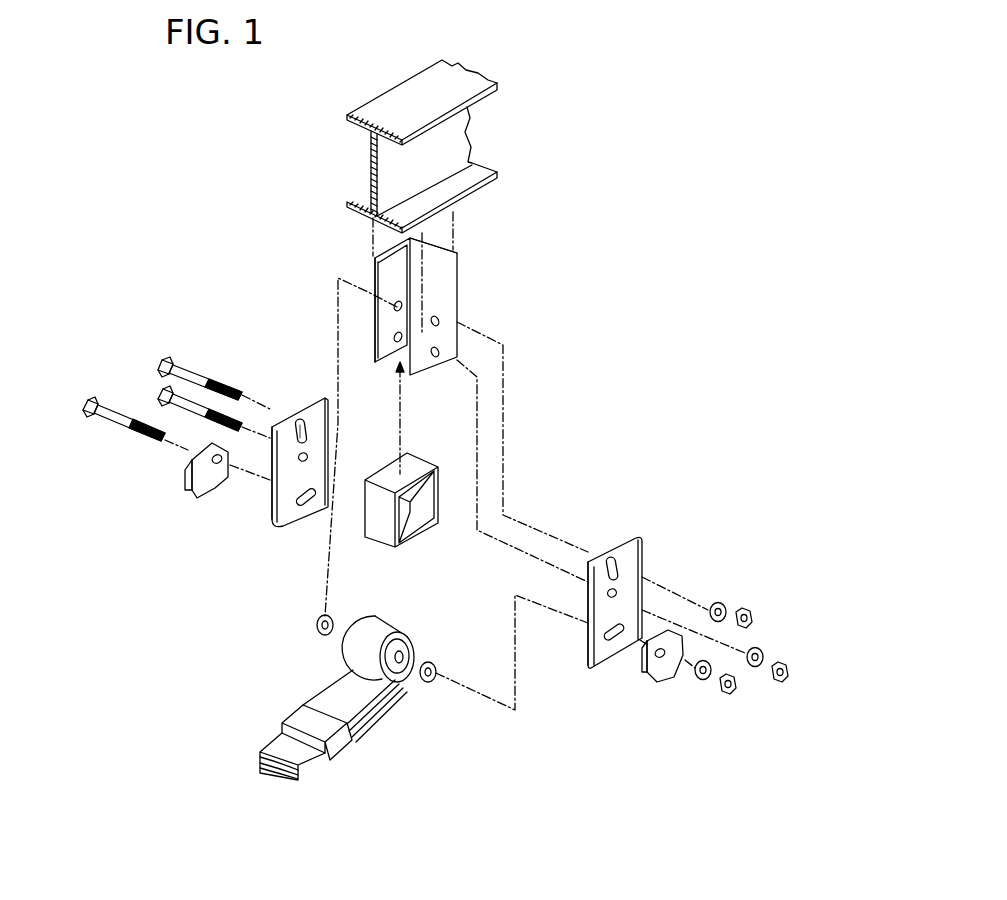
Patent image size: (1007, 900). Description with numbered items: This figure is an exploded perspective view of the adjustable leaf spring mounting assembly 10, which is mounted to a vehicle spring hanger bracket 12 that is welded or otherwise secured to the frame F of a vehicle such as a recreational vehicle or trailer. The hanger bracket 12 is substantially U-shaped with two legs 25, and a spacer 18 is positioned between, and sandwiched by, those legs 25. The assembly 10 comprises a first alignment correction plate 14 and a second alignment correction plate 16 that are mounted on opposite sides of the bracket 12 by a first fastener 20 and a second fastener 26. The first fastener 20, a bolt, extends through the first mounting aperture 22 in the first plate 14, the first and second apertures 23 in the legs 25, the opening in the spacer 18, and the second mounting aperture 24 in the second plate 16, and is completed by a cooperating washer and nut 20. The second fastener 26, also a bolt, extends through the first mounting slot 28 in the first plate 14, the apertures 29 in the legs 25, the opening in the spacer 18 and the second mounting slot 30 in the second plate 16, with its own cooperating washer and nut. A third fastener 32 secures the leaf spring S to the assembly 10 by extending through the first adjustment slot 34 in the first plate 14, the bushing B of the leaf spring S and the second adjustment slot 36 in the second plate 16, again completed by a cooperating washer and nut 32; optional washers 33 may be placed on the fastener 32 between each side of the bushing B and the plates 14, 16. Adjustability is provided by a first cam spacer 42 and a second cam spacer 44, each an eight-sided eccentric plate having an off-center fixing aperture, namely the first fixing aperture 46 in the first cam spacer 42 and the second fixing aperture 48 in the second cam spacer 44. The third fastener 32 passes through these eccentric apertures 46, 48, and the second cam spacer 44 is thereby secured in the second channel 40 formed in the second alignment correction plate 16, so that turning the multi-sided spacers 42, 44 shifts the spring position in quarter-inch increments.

The frame F is at (449, 146).
The adjustable leaf spring mounting assembly 10 is at (622, 365).
The vehicle spring hanger bracket 12 is at (391, 316).
The first alignment correction plate 14 is at (216, 489).
The second alignment correction plate 16 is at (650, 604).
The spacer 18 is at (413, 537).
The first fastener 20 is at (158, 397).
The first mounting aperture 22 is at (272, 480).
The apertures in bracket legs 23 is at (397, 338).
The second mounting aperture 24 is at (616, 592).
The legs 25 is at (382, 282).
The second fastener 26 is at (192, 375).
The first mounting slot 28 is at (303, 425).
The apertures in bracket legs 29 is at (397, 307).
The second mounting slot 30 is at (611, 557).
The third fastener 32 is at (112, 420).
The washers 33 is at (318, 633).
The first adjustment slot 34 is at (306, 506).
The second adjustment slot 36 is at (601, 660).
The second channel 40 is at (609, 610).
The first cam spacer 42 is at (200, 488).
The second cam spacer 44 is at (670, 670).
The first fixing aperture 46 is at (182, 487).
The second fixing aperture 48 is at (658, 656).
The bushing B is at (408, 650).
The leaf spring S is at (358, 727).